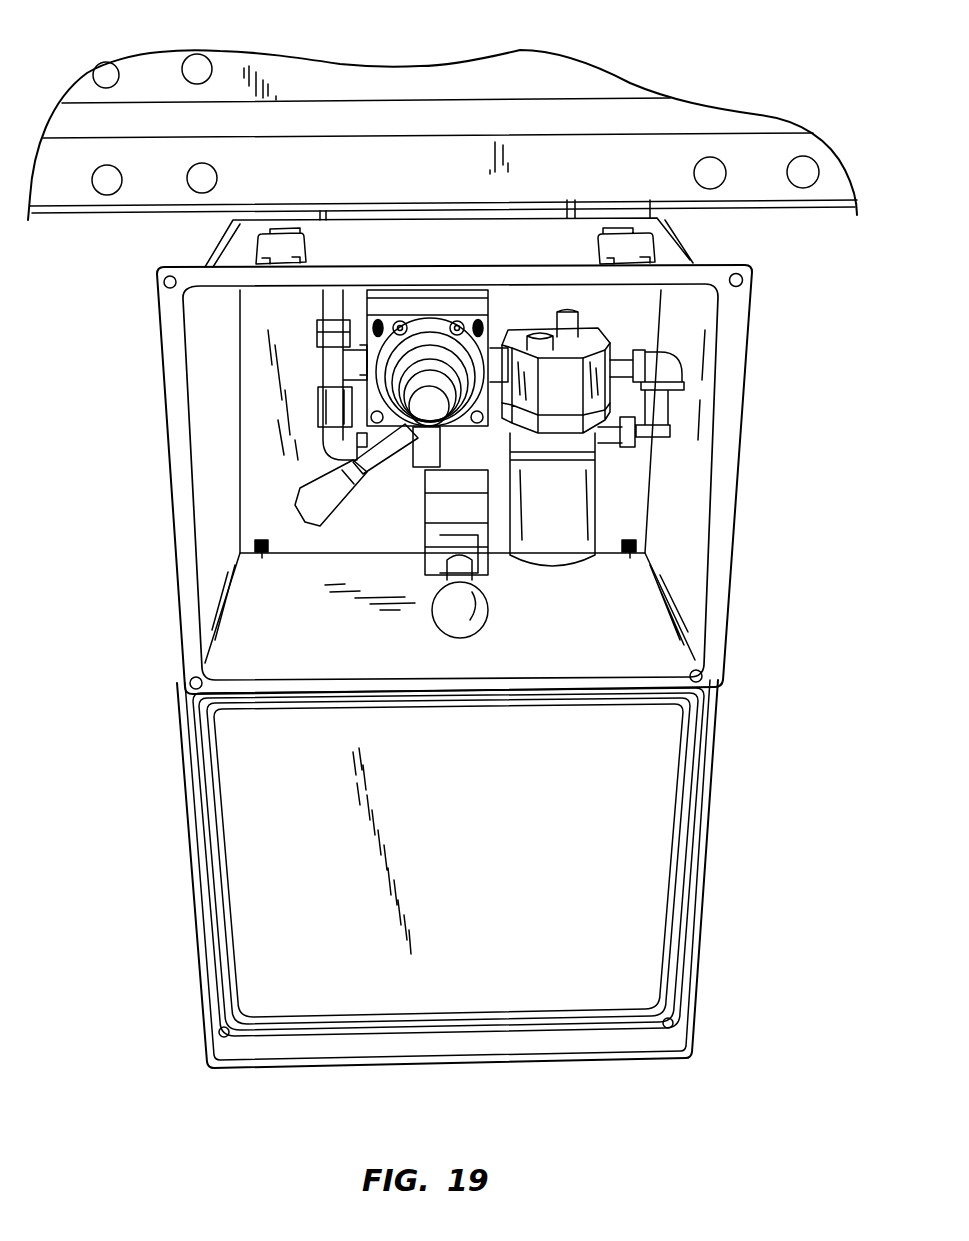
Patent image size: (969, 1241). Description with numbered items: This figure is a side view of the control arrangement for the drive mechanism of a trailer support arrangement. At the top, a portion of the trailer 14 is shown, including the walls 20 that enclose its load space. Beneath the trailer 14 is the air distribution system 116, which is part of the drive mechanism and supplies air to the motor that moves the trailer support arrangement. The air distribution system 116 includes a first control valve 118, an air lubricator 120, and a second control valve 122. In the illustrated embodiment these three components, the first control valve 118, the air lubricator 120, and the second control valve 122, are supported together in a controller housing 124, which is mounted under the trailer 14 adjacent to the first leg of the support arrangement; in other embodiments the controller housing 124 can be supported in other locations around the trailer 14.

The trailer 14 is at (62, 249).
The walls 20 is at (568, 73).
The air distribution system 116 is at (787, 465).
The first control valve 118 is at (423, 308).
The air lubricator 120 is at (552, 545).
The second control valve 122 is at (498, 557).
The controller housing 124 is at (713, 642).